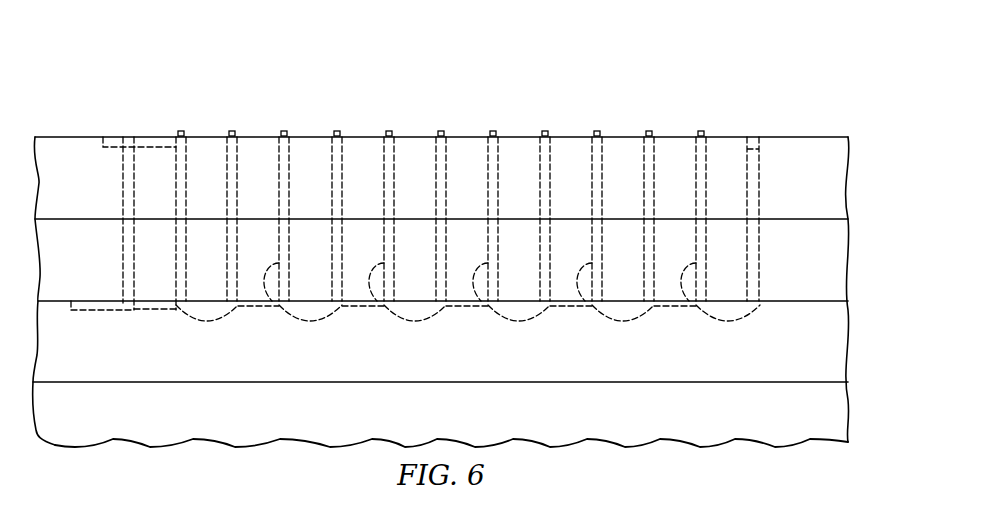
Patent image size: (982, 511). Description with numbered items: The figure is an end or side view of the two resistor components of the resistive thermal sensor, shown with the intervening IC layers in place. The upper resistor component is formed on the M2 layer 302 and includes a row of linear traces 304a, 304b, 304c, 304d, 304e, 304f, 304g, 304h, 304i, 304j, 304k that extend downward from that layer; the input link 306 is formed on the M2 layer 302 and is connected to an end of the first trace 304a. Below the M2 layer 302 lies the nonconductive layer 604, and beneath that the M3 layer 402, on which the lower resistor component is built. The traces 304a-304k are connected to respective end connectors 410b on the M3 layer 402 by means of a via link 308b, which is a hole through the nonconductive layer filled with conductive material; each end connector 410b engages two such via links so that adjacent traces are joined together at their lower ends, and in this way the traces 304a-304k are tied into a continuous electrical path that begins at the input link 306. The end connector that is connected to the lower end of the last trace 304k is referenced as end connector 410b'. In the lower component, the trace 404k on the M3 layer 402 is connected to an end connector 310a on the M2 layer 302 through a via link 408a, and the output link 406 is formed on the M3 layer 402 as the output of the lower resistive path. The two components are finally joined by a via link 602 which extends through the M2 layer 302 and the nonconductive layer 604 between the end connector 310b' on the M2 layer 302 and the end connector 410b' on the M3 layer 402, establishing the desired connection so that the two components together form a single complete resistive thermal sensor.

The M2 layer 302 is at (66, 147).
The linear trace 304a is at (181, 131).
The linear trace 304b is at (232, 131).
The linear trace 304c is at (284, 131).
The linear trace 304d is at (337, 131).
The linear trace 304e is at (389, 131).
The linear trace 304f is at (441, 131).
The linear trace 304g is at (493, 131).
The linear trace 304h is at (545, 131).
The linear trace 304i is at (597, 131).
The linear trace 304j is at (649, 131).
The linear trace 304k is at (701, 131).
The input link 306 is at (103, 152).
The via link 308b is at (272, 301).
The end connector 310a is at (125, 135).
The end connector 310b' is at (762, 179).
The M3 layer 402 is at (355, 384).
The linear trace 404k is at (145, 311).
The output link 406 is at (73, 313).
The via link 408a is at (123, 253).
The end connector 410b is at (413, 339).
The end connector 410b' is at (732, 339).
The via link 602 is at (762, 254).
The nonconductive layer 604 is at (792, 222).